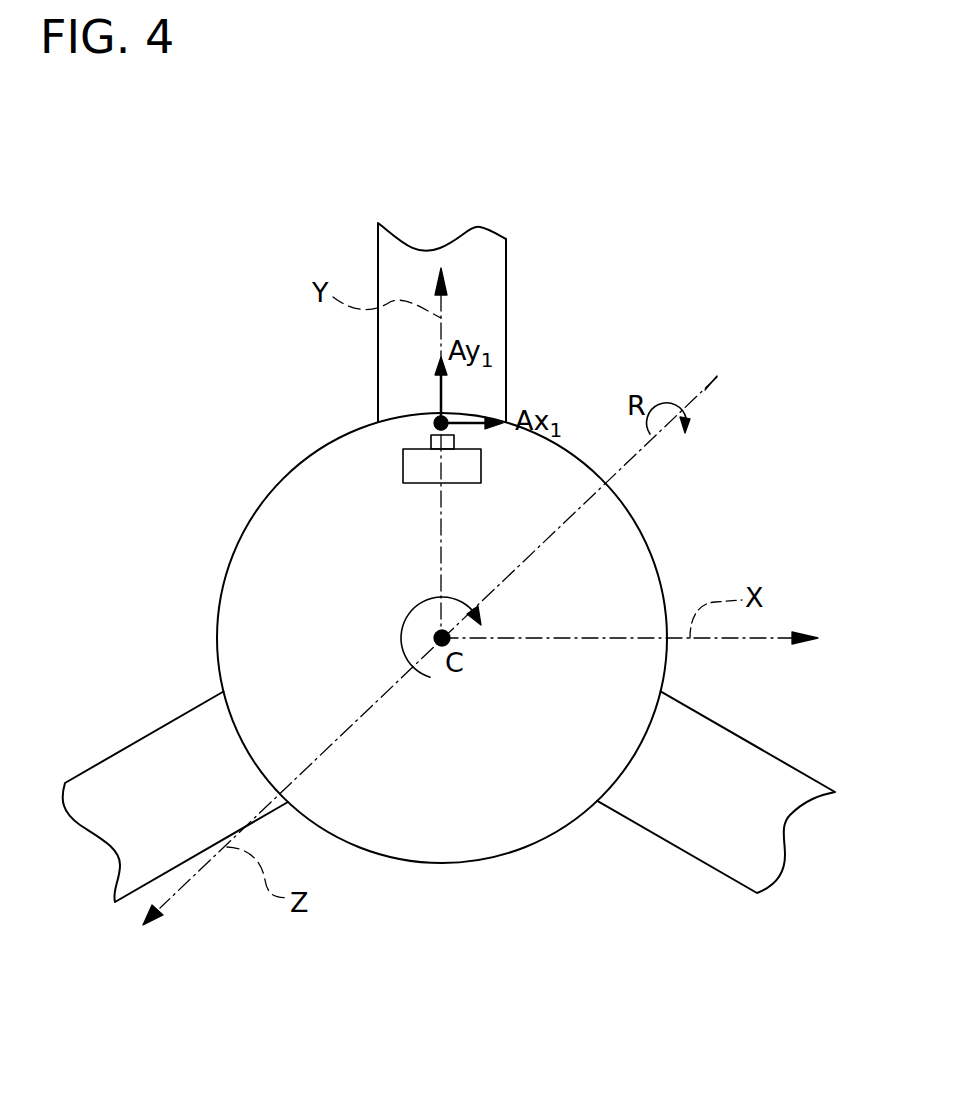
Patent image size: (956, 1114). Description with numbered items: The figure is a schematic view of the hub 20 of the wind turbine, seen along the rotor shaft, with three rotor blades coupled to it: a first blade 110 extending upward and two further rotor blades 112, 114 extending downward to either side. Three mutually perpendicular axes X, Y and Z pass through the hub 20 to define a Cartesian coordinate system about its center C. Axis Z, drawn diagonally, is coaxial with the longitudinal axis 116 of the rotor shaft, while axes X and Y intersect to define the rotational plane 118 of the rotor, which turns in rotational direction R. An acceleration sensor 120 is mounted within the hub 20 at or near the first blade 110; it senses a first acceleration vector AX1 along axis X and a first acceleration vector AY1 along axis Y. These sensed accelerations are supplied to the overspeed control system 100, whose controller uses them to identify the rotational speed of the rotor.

The hub 20 is at (643, 533).
The overspeed control system 100 is at (483, 470).
The first blade 110 is at (506, 274).
The rotor blade 112 is at (733, 732).
The rotor blade 114 is at (145, 732).
The longitudinal axis 116 is at (705, 390).
The rotational plane 118 is at (413, 611).
The acceleration sensor 120 is at (431, 440).